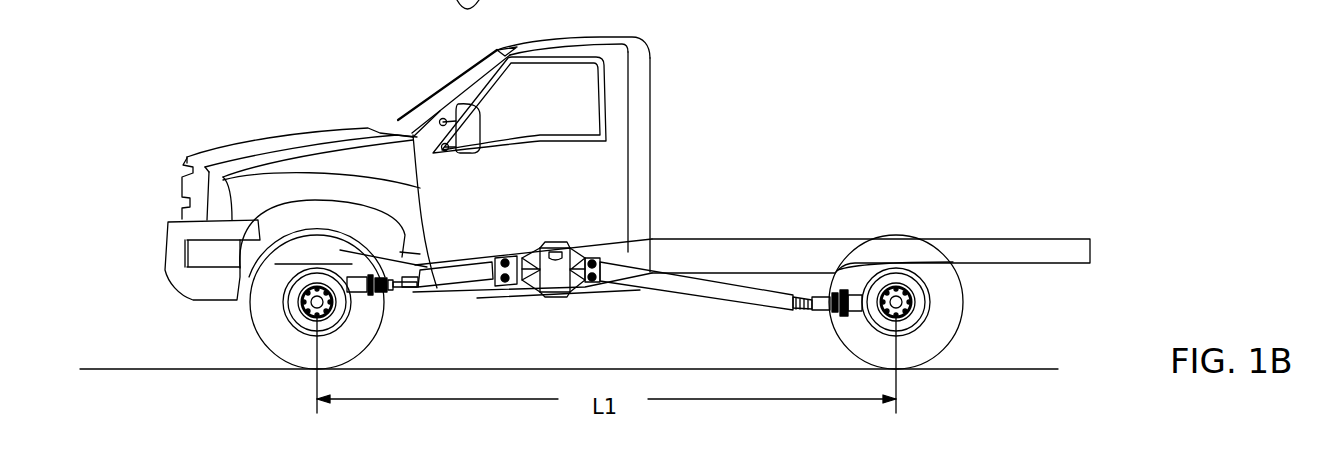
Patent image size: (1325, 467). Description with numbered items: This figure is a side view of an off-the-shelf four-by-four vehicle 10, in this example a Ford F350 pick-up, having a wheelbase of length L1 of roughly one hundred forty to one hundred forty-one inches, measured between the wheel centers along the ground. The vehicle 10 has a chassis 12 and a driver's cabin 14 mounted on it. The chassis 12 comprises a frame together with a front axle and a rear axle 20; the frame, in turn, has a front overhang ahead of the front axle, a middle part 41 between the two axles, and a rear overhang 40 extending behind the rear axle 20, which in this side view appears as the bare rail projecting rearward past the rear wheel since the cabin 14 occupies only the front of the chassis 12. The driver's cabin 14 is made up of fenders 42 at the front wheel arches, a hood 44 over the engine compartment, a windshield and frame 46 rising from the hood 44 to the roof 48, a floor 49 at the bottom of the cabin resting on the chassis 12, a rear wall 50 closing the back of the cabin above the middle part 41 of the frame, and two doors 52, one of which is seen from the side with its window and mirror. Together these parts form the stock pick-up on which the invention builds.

The off-the-shelf 4×4 vehicle 10 is at (980, 108).
The chassis 12 is at (698, 301).
The driver's cabin 14 is at (301, 101).
The rear axle 20 is at (898, 296).
The rear overhang 40 is at (1015, 250).
The middle part 41 is at (677, 238).
The fenders 42 is at (180, 275).
The hood 44 is at (226, 146).
The windshield and frame 46 is at (428, 108).
The roof 48 is at (518, 44).
The floor 49 is at (477, 290).
The rear wall 50 is at (633, 100).
The doors 52 is at (588, 183).